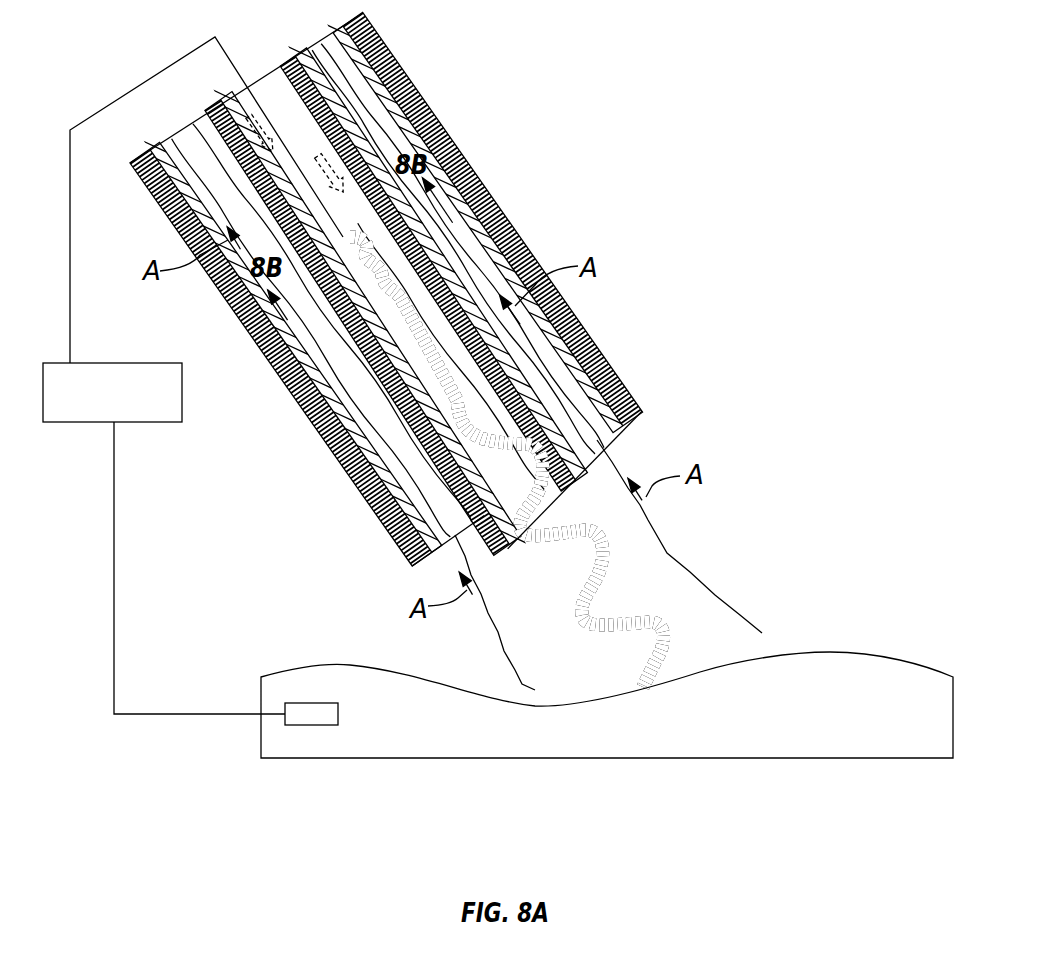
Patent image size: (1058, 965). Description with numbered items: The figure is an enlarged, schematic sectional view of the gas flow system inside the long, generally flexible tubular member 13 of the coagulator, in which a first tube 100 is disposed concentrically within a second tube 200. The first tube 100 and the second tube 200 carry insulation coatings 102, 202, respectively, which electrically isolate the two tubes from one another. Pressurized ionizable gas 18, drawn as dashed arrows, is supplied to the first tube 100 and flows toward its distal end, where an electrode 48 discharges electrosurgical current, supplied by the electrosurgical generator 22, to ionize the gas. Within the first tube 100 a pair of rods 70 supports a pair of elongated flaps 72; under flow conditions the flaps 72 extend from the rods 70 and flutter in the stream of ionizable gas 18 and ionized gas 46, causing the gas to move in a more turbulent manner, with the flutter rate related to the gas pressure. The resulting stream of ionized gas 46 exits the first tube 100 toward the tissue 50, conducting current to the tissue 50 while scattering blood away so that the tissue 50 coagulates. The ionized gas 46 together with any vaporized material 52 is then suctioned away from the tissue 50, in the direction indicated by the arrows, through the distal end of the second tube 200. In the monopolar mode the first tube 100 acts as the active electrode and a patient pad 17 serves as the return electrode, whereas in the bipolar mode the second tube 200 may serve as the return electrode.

The tubular member 13 is at (612, 392).
The patient pad 17 is at (325, 726).
The ionizable gas 18 is at (405, 110).
The electrosurgical generator 22 is at (100, 363).
The ionized gas 46 is at (658, 640).
The electrode 48 is at (395, 258).
The tissue 50 is at (840, 724).
The vaporized material 52 is at (500, 623).
The rods 70 is at (300, 380).
The elongated flaps 72 is at (345, 447).
The first tube 100 is at (320, 250).
The insulation coating 102 is at (272, 98).
The second tube 200 is at (566, 372).
The insulation coating 202 is at (205, 186).